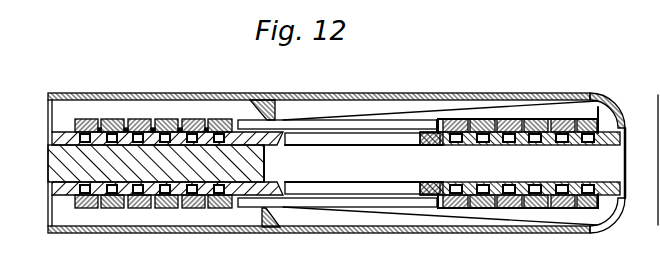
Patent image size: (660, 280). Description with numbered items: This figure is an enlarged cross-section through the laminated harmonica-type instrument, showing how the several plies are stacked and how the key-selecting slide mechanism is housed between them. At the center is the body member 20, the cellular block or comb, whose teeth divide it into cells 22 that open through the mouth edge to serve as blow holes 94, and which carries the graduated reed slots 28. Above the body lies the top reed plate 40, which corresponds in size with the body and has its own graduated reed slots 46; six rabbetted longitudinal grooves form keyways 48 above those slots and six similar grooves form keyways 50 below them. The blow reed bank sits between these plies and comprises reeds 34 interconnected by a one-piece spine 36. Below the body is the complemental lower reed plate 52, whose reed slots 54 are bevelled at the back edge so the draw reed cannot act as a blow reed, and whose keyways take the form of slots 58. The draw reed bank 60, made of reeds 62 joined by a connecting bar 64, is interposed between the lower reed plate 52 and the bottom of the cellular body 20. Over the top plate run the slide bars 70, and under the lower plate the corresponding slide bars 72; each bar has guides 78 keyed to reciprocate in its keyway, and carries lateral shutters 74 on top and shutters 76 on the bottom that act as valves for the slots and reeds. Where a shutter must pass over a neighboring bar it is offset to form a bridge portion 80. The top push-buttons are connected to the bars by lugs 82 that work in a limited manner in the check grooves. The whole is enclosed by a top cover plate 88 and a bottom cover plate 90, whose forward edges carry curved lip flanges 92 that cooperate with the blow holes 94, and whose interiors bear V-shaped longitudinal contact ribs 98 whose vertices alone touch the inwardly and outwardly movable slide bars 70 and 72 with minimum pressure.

The body member 20 is at (48, 150).
The cells 22 is at (503, 181).
The reed slots 28 is at (366, 182).
The reeds 34 is at (332, 146).
The spine 36 is at (426, 143).
The top reed plate 40 is at (62, 132).
The reed slots 46 is at (318, 144).
The keyways 48 is at (480, 142).
The keyways 50 is at (117, 130).
The lower reed plate 52 is at (58, 195).
The reed slots 54 is at (300, 190).
The keyway slots 58 is at (109, 193).
The reed bank 60 is at (398, 178).
The reeds 62 is at (314, 181).
The connecting bar 64 is at (431, 196).
The slide bars 70 is at (176, 122).
The slide bars 72 is at (88, 208).
The shutters 74 is at (406, 108).
The shutters 76 is at (378, 216).
The guides 78 is at (86, 137).
The bridge portions 80 is at (534, 116).
The lugs 82 is at (600, 112).
The top cover plate 88 is at (377, 93).
The bottom cover plate 90 is at (328, 233).
The curved lip flanges 92 is at (621, 106).
The blow holes 94 is at (623, 173).
The longitudinal contact ribs 98 is at (277, 110).